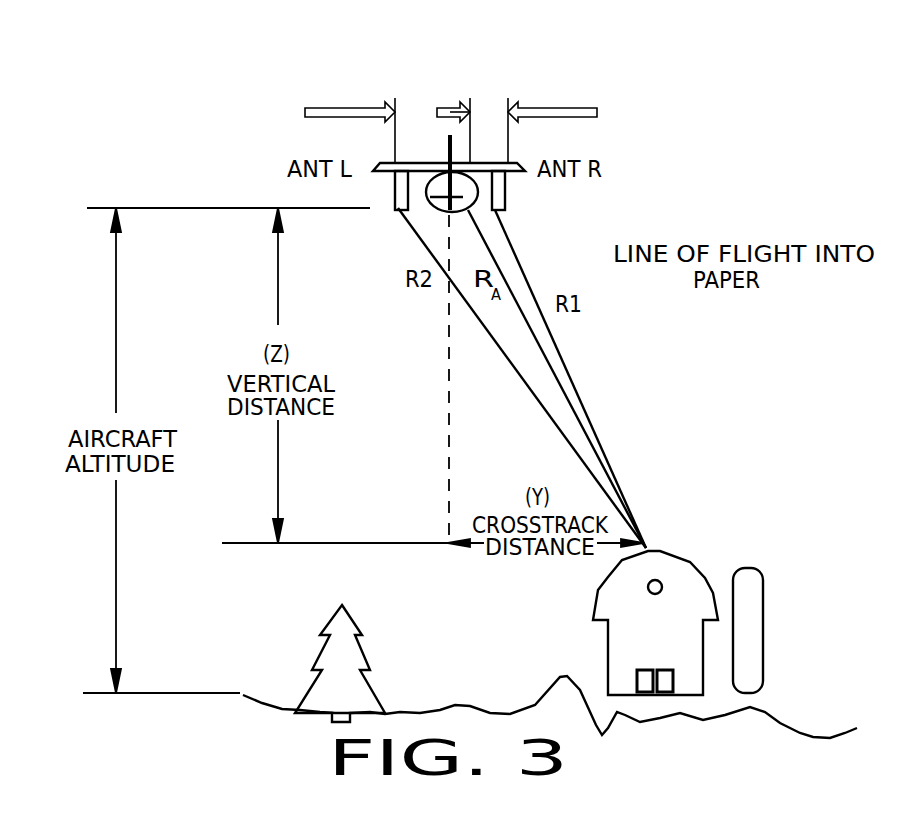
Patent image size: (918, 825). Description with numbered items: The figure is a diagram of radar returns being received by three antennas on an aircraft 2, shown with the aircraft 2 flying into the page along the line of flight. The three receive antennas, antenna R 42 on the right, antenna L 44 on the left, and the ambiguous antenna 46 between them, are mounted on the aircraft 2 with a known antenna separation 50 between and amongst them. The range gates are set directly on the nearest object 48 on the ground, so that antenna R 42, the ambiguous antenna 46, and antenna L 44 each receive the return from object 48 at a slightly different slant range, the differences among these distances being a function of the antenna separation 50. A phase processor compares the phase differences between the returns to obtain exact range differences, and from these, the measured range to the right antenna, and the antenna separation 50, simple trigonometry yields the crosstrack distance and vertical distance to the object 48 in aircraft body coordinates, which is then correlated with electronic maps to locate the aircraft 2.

The aircraft 2 is at (528, 165).
The antenna R 42 is at (508, 200).
The antenna L 44 is at (395, 205).
The ambiguous antenna 46 is at (410, 190).
The nearest object 48 is at (697, 543).
The antenna separation 50 is at (466, 90).